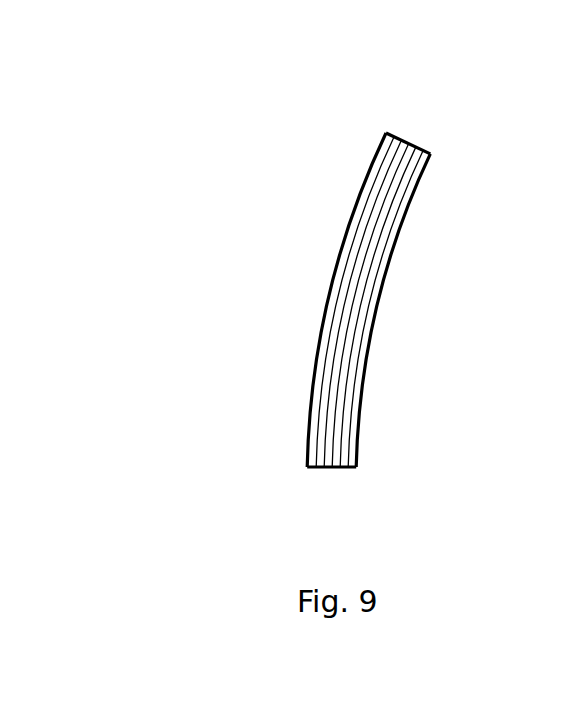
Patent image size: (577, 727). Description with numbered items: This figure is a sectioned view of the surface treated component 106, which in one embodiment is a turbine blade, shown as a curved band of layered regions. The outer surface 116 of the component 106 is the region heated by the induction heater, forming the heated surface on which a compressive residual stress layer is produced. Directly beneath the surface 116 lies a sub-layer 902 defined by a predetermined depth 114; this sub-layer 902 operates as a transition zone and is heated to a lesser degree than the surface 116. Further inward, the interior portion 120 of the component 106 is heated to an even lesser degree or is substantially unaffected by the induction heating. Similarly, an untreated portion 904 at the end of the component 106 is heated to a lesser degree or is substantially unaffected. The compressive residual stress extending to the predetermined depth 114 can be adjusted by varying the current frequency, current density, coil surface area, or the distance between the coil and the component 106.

The component 106 is at (262, 328).
The untreated portion 904 is at (386, 133).
The interior portion 120 is at (337, 308).
The sub-layer 902 is at (345, 352).
The predetermined depth 114 is at (376, 253).
The surface 116 is at (377, 308).